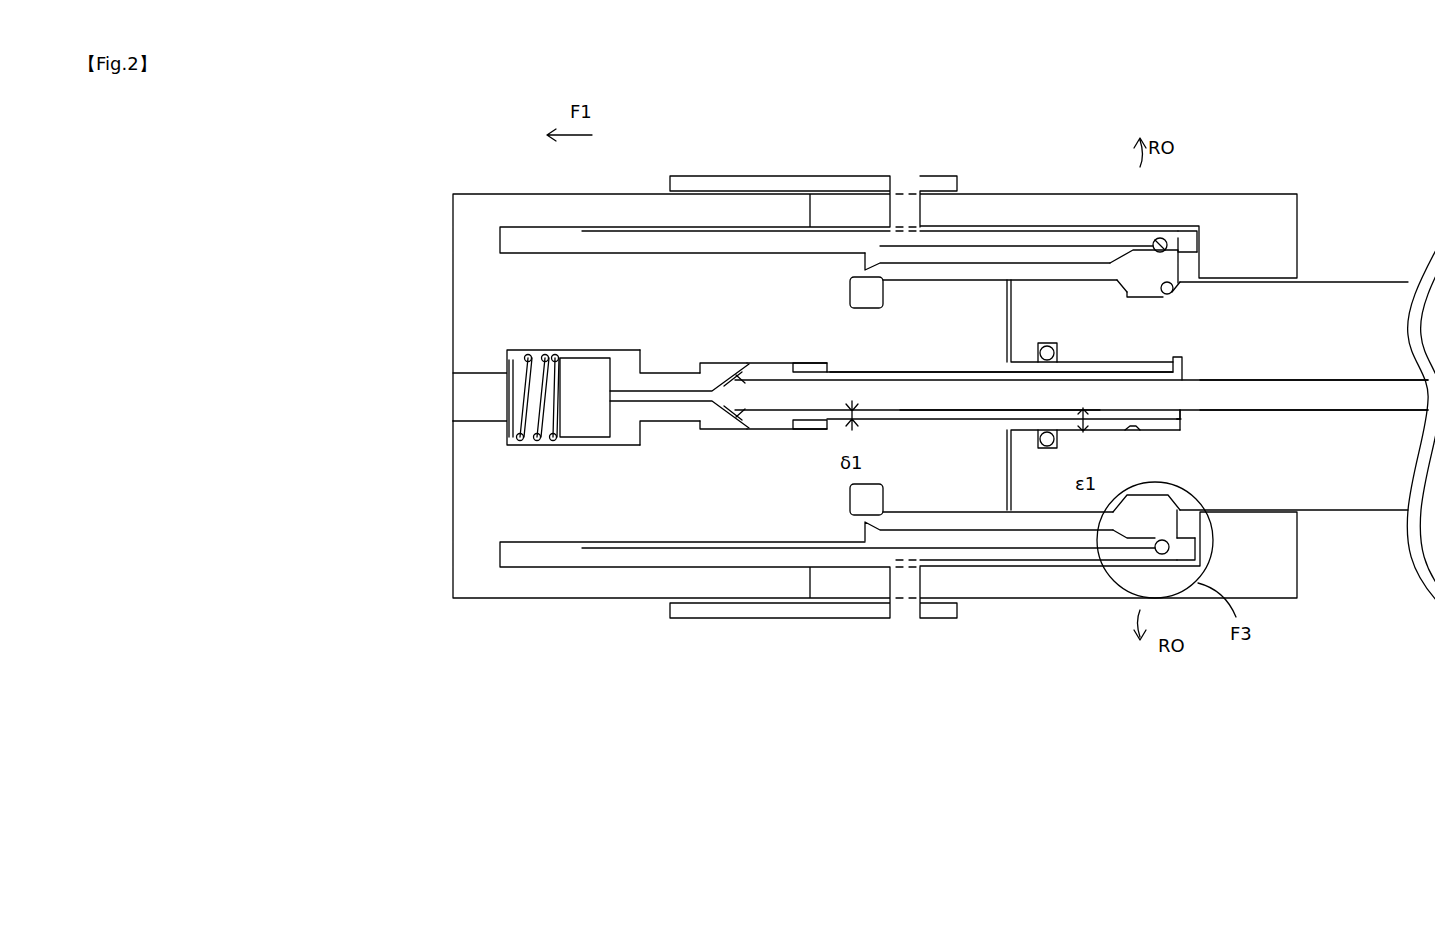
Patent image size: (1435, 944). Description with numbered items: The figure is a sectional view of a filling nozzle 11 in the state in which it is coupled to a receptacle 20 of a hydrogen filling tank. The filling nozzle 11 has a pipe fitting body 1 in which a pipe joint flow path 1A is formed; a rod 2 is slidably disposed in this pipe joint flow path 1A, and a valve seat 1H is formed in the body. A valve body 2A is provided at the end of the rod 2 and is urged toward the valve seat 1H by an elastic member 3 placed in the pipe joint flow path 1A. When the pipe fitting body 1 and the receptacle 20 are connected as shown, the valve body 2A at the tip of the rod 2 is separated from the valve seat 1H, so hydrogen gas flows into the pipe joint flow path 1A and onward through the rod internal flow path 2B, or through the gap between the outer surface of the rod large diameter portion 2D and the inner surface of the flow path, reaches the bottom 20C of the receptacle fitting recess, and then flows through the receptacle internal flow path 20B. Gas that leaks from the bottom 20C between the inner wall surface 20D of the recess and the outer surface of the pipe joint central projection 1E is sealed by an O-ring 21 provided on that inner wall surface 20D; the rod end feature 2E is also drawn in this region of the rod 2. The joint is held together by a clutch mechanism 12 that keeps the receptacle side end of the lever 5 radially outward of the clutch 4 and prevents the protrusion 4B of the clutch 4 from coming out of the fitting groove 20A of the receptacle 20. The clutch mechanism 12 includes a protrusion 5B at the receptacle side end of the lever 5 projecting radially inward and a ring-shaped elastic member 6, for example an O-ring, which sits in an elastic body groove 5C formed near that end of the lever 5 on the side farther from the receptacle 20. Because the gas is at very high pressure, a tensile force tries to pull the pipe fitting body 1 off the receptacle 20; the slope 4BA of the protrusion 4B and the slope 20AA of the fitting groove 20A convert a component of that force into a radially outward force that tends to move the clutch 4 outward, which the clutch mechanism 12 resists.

The pipe fitting body 1 is at (455, 238).
The pipe joint flow path 1A is at (705, 377).
The pipe joint central projection 1E is at (1175, 359).
The valve seat 1H is at (641, 360).
The rod 2 is at (930, 418).
The valve body 2A is at (585, 362).
The rod internal flow path 2B is at (968, 400).
The rod large diameter portion 2D is at (928, 370).
The piston jaw 2E is at (740, 385).
The elastic member 3 is at (524, 352).
The clutch 4 is at (977, 266).
The protrusion 4B is at (1133, 262).
The slope 4BA is at (1117, 292).
The lever 5 is at (1015, 233).
The protrusion 5B is at (1200, 243).
The elastic body groove 5C is at (1173, 243).
The ring-shaped elastic member 6 is at (1153, 243).
The filling nozzle 11 is at (450, 117).
The clutch mechanism 12 is at (1122, 154).
The receptacle 20 is at (1370, 290).
The fitting groove 20A is at (1172, 292).
The slope 20AA is at (1140, 297).
The receptacle internal flow path 20B is at (1322, 395).
The bottom of receptacle fitting recess 20C is at (1183, 427).
The inner wall surface of receptacle fitting recess 20D is at (1128, 432).
The O-ring 21 is at (1047, 447).